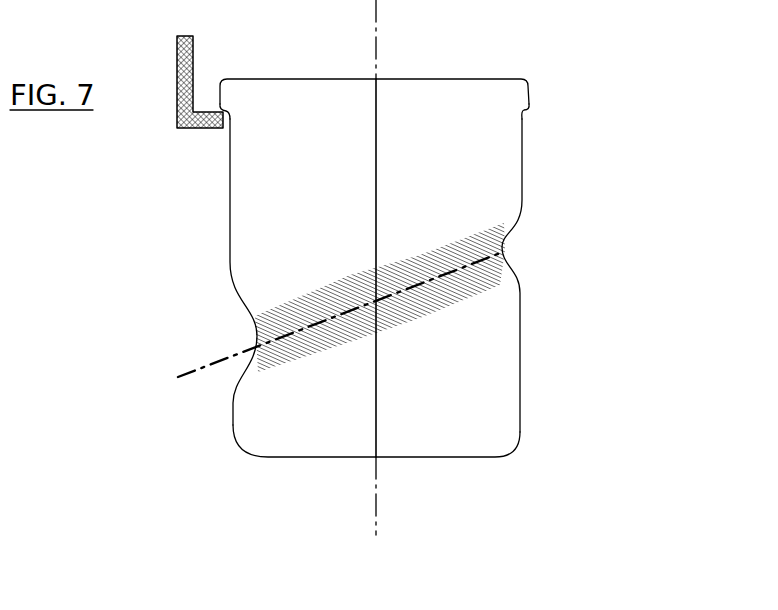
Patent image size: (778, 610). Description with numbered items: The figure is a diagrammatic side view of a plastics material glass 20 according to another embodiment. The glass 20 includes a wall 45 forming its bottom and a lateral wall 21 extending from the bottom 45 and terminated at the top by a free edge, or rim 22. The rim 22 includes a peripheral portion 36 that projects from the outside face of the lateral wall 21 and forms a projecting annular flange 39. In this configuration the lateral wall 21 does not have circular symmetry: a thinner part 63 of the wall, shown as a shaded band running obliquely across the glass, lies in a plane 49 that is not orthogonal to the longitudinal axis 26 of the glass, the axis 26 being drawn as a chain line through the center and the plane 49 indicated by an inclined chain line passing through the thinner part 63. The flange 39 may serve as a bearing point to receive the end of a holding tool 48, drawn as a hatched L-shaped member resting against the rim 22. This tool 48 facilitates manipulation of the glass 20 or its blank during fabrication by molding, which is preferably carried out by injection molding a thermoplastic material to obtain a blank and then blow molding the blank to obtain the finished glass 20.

The glass 20 is at (646, 206).
The lateral wall 21 is at (523, 374).
The free edge (rim) 22 is at (460, 78).
The longitudinal axis 26 is at (373, 63).
The peripheral portion 36 is at (229, 95).
The flange 39 is at (530, 114).
The wall forming the bottom 45 is at (420, 458).
The holding tool 48 is at (217, 131).
The plane 49 is at (183, 367).
The thinner part 63 is at (340, 288).